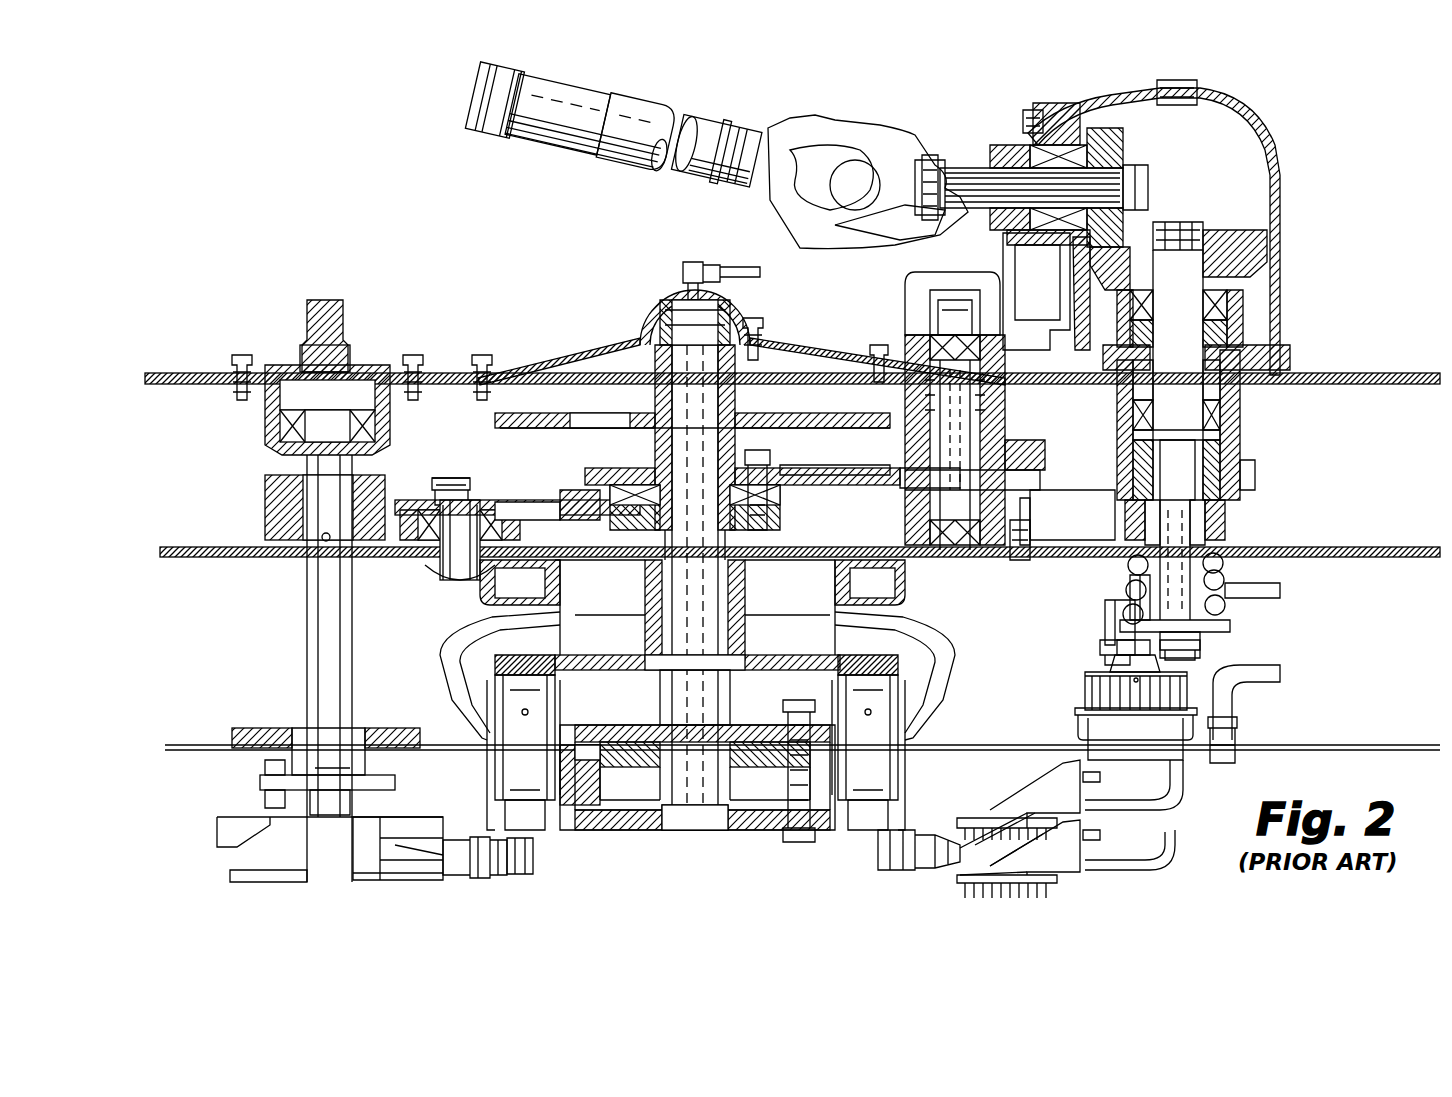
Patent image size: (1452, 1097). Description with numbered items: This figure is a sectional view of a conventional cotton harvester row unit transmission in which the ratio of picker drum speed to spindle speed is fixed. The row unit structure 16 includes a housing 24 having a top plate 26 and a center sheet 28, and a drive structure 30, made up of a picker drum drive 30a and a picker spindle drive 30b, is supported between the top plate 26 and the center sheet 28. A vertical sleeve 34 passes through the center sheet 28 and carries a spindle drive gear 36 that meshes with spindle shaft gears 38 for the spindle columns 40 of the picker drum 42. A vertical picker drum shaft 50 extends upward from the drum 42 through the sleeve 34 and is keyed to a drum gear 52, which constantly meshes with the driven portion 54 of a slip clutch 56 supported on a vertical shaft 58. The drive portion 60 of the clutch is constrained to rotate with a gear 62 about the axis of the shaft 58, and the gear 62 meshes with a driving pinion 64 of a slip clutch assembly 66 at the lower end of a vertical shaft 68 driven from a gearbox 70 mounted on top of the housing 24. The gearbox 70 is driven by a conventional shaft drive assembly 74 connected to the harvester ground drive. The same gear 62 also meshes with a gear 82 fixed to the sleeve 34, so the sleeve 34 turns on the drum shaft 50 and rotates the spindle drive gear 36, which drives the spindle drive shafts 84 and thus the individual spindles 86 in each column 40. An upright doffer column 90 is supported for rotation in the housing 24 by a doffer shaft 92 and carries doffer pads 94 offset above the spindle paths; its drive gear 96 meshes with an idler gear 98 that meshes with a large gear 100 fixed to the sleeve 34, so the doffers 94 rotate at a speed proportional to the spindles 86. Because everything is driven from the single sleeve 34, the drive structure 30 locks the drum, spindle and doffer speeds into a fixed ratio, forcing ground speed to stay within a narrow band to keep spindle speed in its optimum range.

The row unit structure 16 is at (1367, 284).
The housing 24 is at (198, 372).
The top plate 26 is at (1420, 374).
The center sheet 28 is at (1405, 547).
The drive structure 30 is at (1224, 443).
The picker drum drive 30a is at (782, 398).
The picker spindle drive 30b is at (905, 520).
The vertical sleeve 34 is at (750, 575).
The spindle drive gear 36 is at (600, 672).
The spindle shaft gears 38 is at (545, 658).
The spindle columns 40 is at (515, 878).
The picker drum 42 is at (928, 806).
The vertical picker drum shaft 50 is at (712, 640).
The drum gear 52 is at (535, 414).
The driven portion 54 is at (1040, 428).
The slip clutch 56 is at (903, 396).
The vertical shaft 58 is at (1025, 450).
The drive portion 60 is at (1032, 546).
The gear 62 is at (1095, 490).
The driving pinion 64 is at (1260, 498).
The slip clutch assembly 66 is at (1253, 566).
The vertical shaft 68 is at (1190, 458).
The gearbox 70 is at (1297, 215).
The shaft drive assembly 74 is at (820, 105).
The gear 82 is at (603, 468).
The spindle drive shafts 84 is at (540, 846).
The spindles 86 is at (415, 848).
The doffer column 90 is at (250, 692).
The doffer shaft 92 is at (305, 597).
The doffer pads 94 is at (245, 815).
The drive gear 96 is at (265, 497).
The idler gear 98 is at (400, 492).
The large gear 100 is at (548, 500).